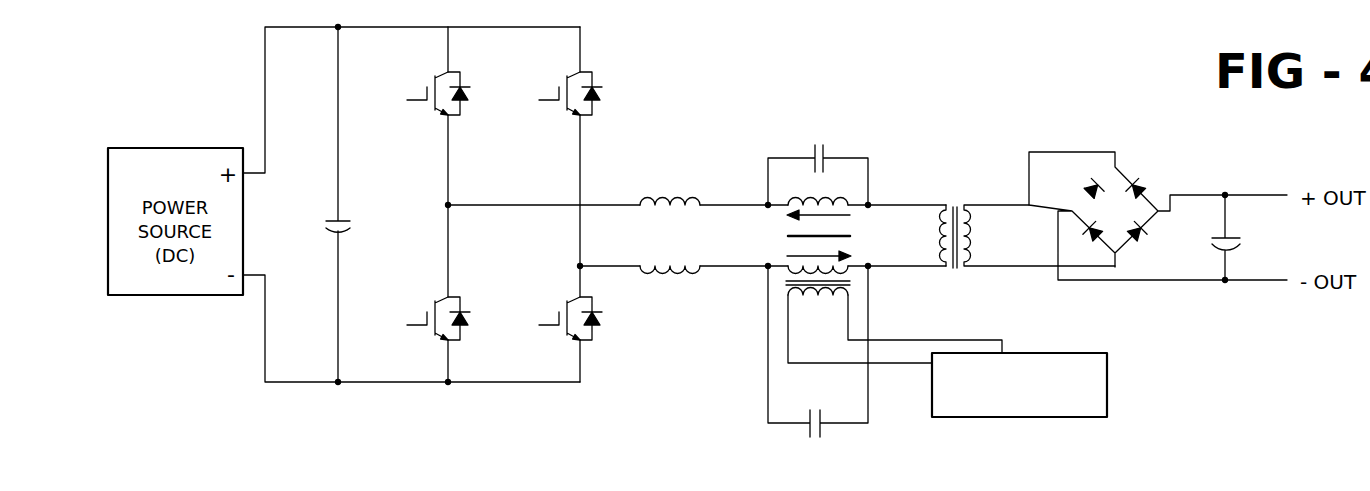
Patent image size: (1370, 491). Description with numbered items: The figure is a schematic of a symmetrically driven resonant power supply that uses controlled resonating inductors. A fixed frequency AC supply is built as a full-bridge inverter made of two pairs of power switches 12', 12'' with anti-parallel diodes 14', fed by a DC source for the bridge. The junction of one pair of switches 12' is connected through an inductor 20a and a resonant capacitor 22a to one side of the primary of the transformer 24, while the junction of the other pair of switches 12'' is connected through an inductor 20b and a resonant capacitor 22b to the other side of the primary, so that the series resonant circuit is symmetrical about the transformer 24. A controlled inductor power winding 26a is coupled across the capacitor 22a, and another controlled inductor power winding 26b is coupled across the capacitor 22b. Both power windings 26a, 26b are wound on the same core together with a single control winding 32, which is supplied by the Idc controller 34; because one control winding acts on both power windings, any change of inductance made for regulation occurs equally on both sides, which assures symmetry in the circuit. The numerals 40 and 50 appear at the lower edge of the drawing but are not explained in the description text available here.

The power switches 12' is at (411, 191).
The power switches 12'' is at (546, 189).
The anti-parallel diodes 14' is at (568, 242).
The inductor 20a is at (662, 198).
The inductor 20b is at (678, 273).
The resonant capacitor 22a is at (825, 148).
The resonant capacitor 22b is at (822, 430).
The transformer 24 is at (953, 207).
The controlled inductor power winding 26a is at (842, 201).
The controlled inductor power winding 26b is at (798, 262).
The control winding 32 is at (848, 292).
The Idc controller 34 is at (1108, 390).
The inverter circuit 40 is at (568, 490).
The resonant circuit 50 is at (451, 482).